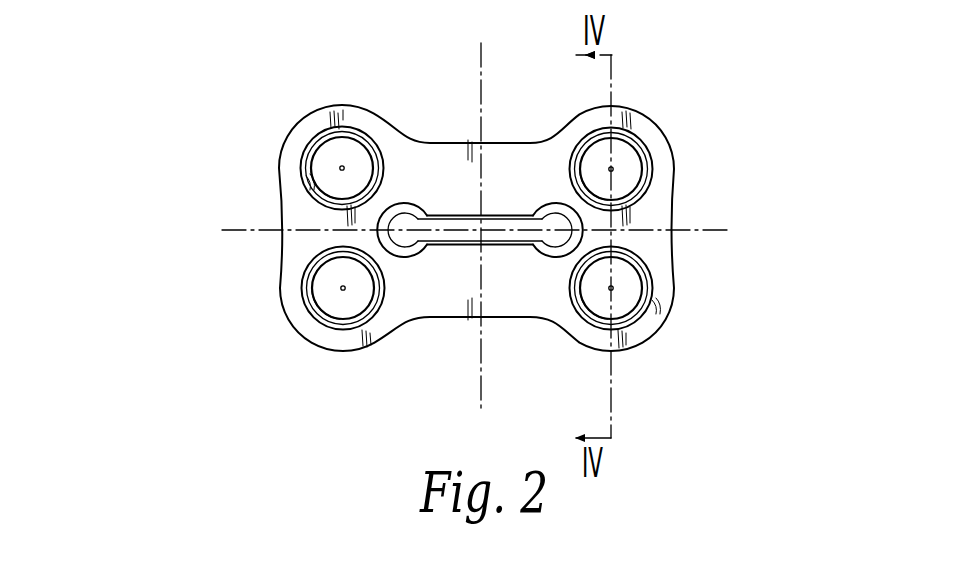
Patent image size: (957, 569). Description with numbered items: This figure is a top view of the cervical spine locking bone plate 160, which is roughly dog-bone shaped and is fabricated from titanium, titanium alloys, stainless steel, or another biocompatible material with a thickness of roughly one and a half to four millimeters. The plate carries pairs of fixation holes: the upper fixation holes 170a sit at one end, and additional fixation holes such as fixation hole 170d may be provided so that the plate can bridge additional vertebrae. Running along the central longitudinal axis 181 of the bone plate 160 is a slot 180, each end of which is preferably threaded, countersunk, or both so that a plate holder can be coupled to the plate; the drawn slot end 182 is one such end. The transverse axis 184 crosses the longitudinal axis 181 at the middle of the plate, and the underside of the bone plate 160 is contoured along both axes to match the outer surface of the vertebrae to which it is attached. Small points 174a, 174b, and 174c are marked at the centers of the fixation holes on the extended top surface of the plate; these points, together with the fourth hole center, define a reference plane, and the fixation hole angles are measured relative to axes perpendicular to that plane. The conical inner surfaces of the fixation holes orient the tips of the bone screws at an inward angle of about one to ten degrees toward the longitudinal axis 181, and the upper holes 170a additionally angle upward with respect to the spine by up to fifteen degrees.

The cervical spine locking bone plate 160 is at (270, 130).
The upper fixation holes 170a is at (302, 285).
The additional fixation hole 170d is at (634, 322).
The point centered over fixation hole 174a is at (336, 168).
The point centered over fixation hole 174b is at (616, 162).
The point centered over fixation hole 174c is at (344, 298).
The slot 180 is at (572, 271).
The slot end 182 is at (584, 224).
The longitudinal axis 181 is at (710, 233).
The transverse axis 184 is at (480, 82).